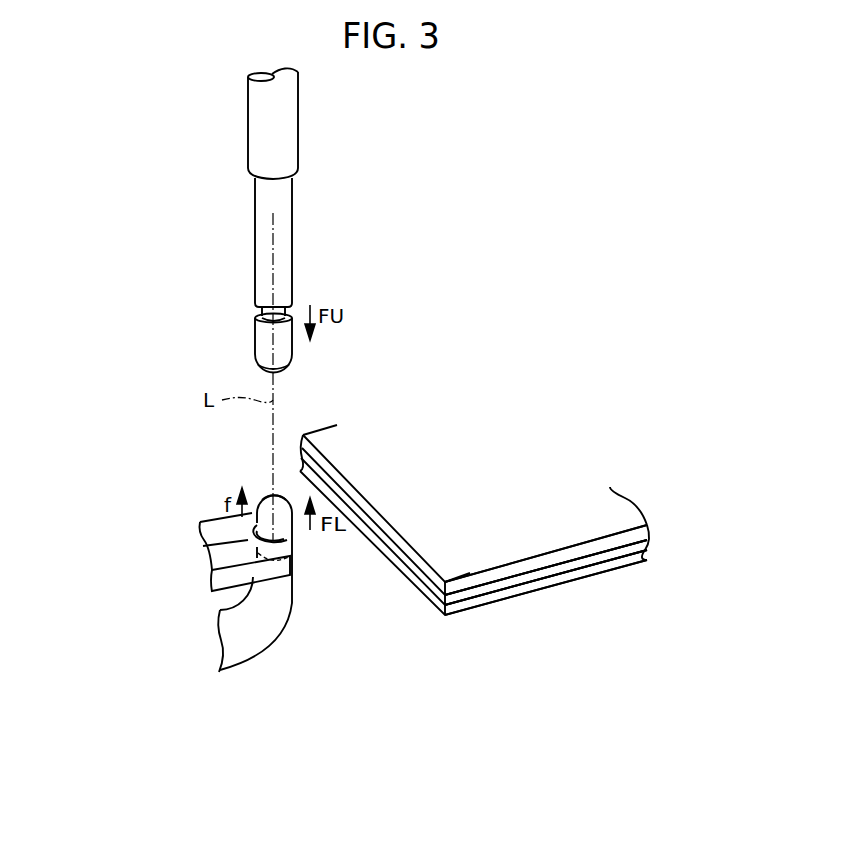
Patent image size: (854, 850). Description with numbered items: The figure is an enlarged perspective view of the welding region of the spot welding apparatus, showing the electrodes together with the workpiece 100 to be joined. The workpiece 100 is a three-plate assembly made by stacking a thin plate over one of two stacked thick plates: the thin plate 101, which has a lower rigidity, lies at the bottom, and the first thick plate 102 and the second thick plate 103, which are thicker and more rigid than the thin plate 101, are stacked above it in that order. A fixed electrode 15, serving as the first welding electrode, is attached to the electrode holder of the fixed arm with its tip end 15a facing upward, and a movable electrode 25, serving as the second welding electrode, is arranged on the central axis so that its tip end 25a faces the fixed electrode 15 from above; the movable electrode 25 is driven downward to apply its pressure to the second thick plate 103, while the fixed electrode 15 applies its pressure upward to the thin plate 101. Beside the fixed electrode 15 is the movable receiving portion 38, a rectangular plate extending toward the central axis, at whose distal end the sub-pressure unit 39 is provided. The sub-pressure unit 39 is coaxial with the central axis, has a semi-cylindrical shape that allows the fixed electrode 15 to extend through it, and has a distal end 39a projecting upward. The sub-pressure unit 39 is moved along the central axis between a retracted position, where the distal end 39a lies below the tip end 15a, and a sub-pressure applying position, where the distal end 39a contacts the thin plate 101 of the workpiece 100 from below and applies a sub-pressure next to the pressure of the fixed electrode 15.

The fixed electrode 15 is at (287, 532).
The tip end of fixed electrode 15a is at (273, 494).
The movable electrode 25 is at (262, 331).
The tip end of movable electrode 25a is at (272, 371).
The movable receiving portion 38 is at (212, 583).
The sub-pressure unit 39 is at (203, 547).
The distal end of sub-pressure unit 39a is at (257, 522).
The workpiece 100 is at (474, 559).
The thin plate 101 is at (605, 570).
The first thick plate 102 is at (565, 570).
The second thick plate 103 is at (630, 652).